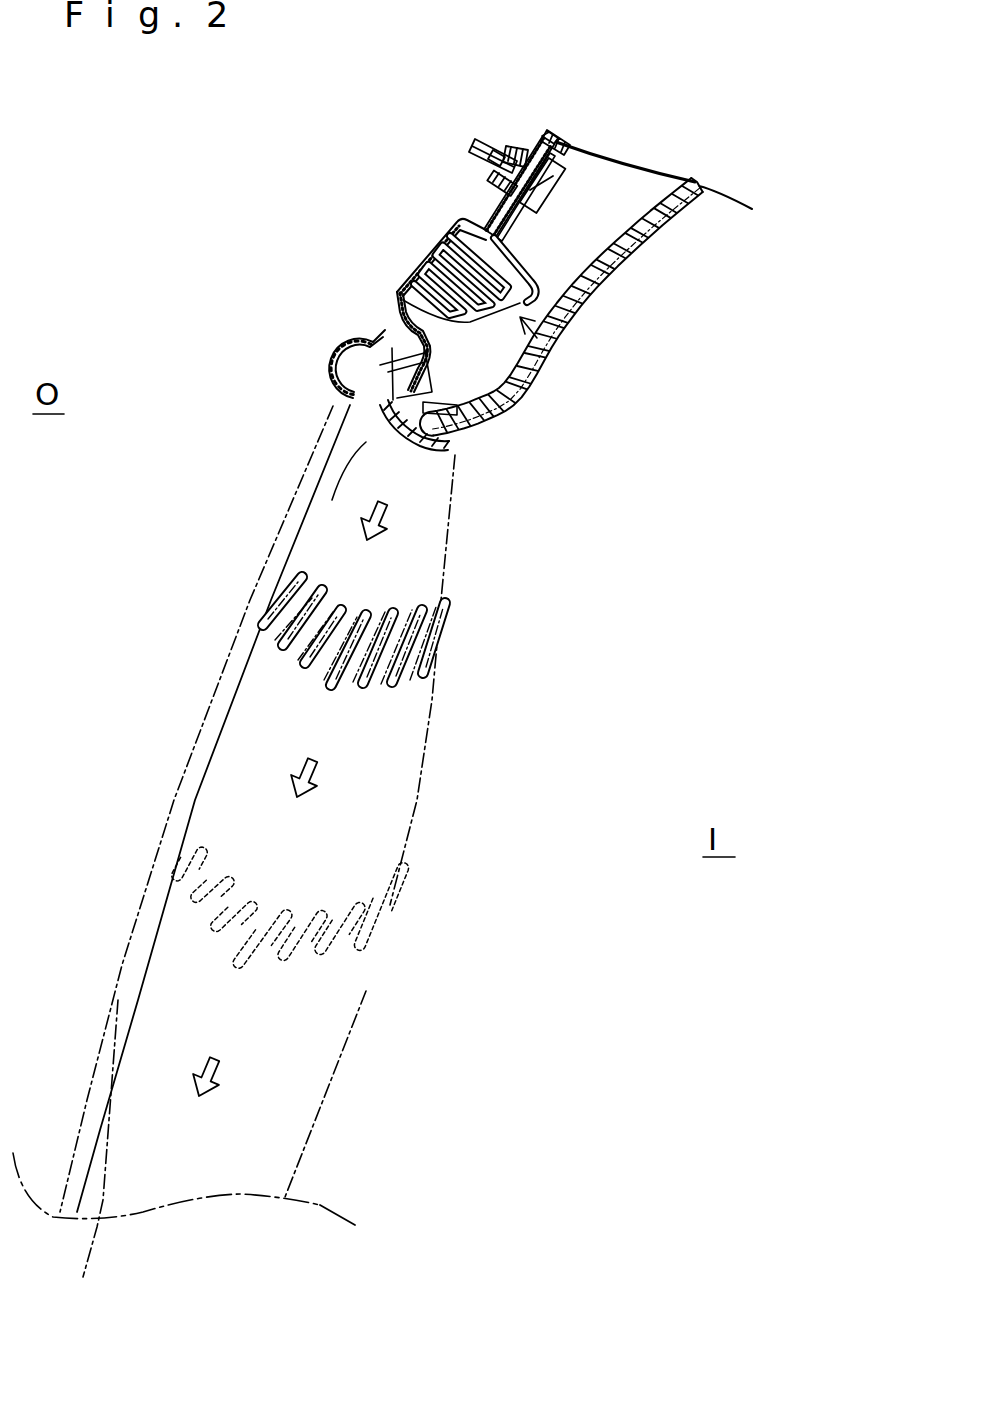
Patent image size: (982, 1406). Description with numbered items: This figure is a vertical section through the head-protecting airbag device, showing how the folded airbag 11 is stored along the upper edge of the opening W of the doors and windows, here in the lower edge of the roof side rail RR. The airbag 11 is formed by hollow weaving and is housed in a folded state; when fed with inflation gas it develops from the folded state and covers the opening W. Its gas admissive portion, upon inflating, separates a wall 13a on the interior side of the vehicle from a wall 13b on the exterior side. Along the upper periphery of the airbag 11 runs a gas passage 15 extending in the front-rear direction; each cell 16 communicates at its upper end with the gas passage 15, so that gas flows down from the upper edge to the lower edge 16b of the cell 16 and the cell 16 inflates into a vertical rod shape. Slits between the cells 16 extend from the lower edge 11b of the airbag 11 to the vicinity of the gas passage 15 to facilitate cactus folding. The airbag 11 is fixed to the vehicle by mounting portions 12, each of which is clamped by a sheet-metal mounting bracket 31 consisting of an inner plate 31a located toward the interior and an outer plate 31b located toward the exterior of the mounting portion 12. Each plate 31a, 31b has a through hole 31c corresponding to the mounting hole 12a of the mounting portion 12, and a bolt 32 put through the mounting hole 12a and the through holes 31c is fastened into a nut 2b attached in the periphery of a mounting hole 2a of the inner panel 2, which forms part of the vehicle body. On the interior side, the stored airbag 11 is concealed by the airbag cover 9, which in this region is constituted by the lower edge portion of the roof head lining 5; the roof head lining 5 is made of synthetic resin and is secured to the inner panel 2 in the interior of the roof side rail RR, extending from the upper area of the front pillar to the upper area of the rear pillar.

The inner panel 2 is at (552, 132).
The mounting hole 2a is at (503, 153).
The nut 2b is at (520, 140).
The roof head lining 5 is at (617, 270).
The airbag cover 9 is at (484, 423).
The airbag 11 is at (517, 280).
The lower edge of the airbag 11b is at (397, 290).
The mounting portion 12 is at (490, 222).
The mounting hole 12a is at (558, 193).
The interior wall 13a is at (322, 1122).
The exterior wall 13b is at (88, 1155).
The gas passage 15 is at (525, 282).
The cell 16 is at (392, 1025).
The lower edge of the cell 16b is at (327, 700).
The mounting bracket 31 is at (555, 136).
The inner plate 31a is at (570, 155).
The outer plate 31b is at (565, 135).
The through hole 31c is at (487, 173).
The bolt 32 is at (498, 152).
The opening W is at (157, 864).
The roof side rail RR is at (714, 250).